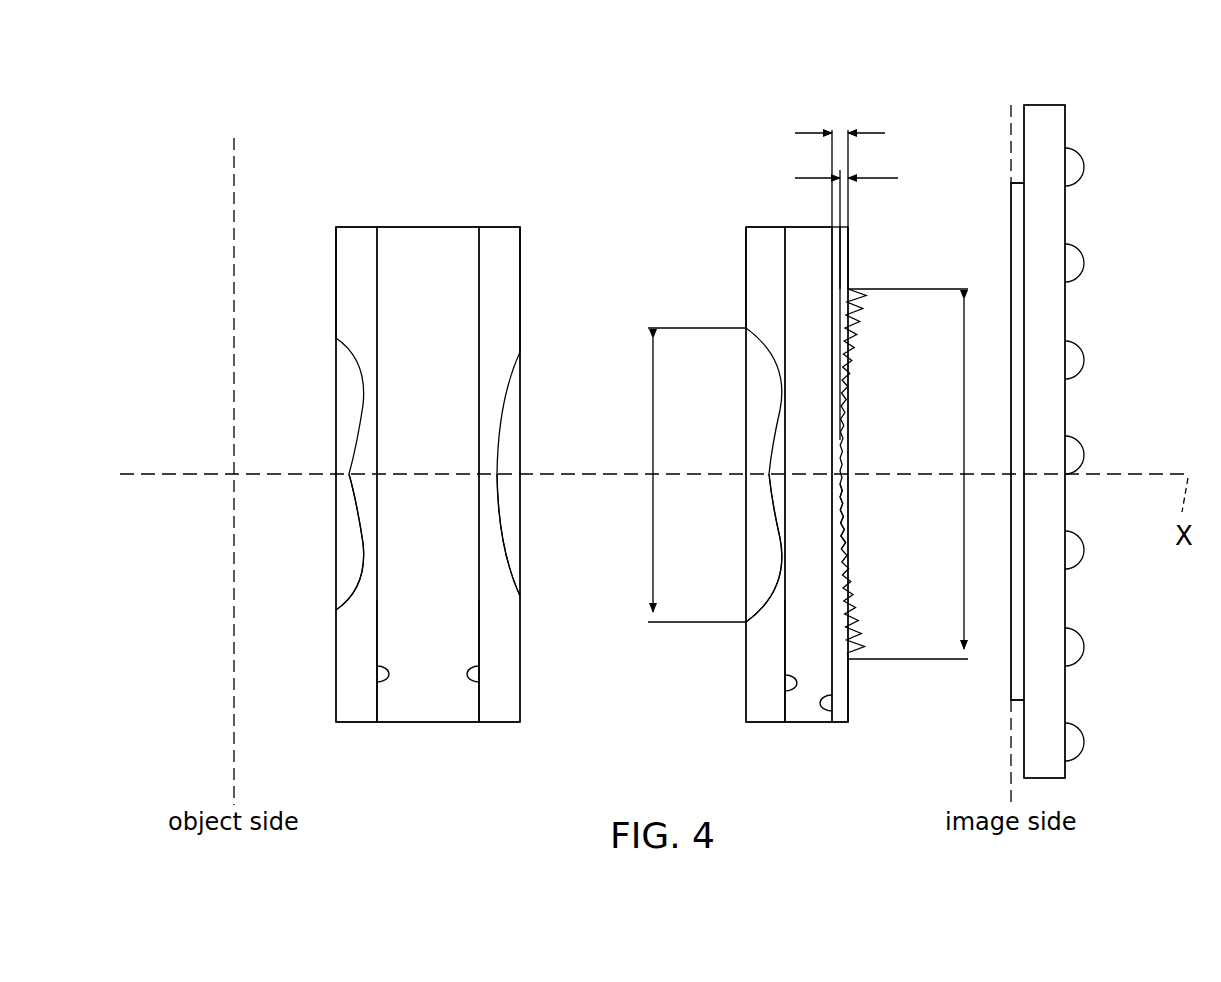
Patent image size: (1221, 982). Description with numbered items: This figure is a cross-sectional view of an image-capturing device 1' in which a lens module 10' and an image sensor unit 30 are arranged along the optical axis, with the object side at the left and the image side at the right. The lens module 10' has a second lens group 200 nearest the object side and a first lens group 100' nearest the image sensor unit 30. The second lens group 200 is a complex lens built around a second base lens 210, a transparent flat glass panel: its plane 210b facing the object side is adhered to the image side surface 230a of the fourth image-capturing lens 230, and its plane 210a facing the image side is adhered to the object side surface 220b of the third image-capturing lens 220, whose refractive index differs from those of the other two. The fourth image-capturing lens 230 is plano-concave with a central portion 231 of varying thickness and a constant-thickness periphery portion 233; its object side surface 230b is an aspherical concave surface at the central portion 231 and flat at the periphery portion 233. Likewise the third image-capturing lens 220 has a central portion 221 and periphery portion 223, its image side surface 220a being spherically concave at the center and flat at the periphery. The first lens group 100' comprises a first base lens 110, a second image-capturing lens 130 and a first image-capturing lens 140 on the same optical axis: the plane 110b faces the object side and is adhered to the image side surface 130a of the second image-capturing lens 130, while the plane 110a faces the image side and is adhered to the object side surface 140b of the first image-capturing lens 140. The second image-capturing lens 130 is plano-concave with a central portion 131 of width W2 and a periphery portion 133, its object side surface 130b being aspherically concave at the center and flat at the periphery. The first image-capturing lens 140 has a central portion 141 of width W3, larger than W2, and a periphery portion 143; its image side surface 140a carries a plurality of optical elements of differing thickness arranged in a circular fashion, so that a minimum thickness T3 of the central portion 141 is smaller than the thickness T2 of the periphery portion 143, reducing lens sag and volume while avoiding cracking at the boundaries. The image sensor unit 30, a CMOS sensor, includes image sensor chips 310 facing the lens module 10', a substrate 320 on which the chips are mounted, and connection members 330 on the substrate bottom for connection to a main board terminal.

The image-capturing device 1' is at (166, 91).
The lens module 10' is at (278, 124).
The second lens group 200 is at (355, 225).
The fourth image-capturing lens 230 is at (358, 712).
The second base lens 210 is at (430, 712).
The third image-capturing lens 220 is at (502, 712).
The central portion 231 is at (355, 447).
The central portion 221 is at (500, 447).
The periphery portion 233 is at (350, 240).
The periphery portion 223 is at (506, 240).
The object side surface 230b is at (355, 520).
The image side surface 220a is at (502, 520).
The image side surface 230a is at (378, 643).
The object side surface 220b is at (478, 643).
The plane 210b is at (378, 685).
The plane 210a is at (478, 685).
The first lens group 100' is at (786, 440).
The second image-capturing lens 130 is at (765, 712).
The first base lens 110 is at (807, 712).
The first image-capturing lens 140 is at (840, 712).
The image side surface 140a is at (846, 428).
The central portion 141 is at (843, 528).
The periphery portion 143 is at (844, 240).
The periphery portion 133 is at (758, 240).
The central portion 131 is at (775, 447).
The object side surface 130b is at (775, 530).
The image side surface 130a is at (786, 653).
The plane 110b is at (787, 688).
The plane 110a is at (835, 708).
The object side surface 140b is at (836, 685).
The image sensor unit 30 is at (1022, 100).
The substrate 320 is at (1055, 310).
The image sensor chips 310 is at (1020, 403).
The connection member 330 is at (1080, 265).
The width of the central portion W2 is at (675, 475).
The width of the central portion W3 is at (908, 474).
The thickness of the periphery portion T2 is at (840, 115).
The minimum thickness of the central portion T3 is at (846, 163).